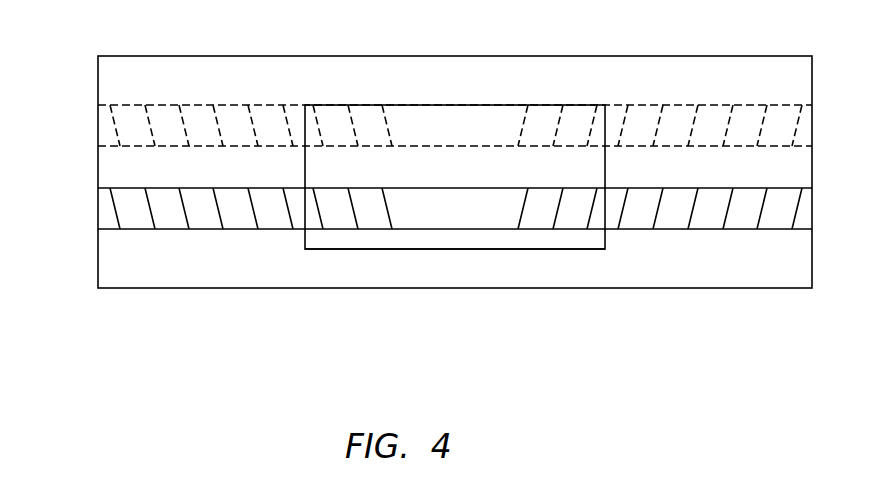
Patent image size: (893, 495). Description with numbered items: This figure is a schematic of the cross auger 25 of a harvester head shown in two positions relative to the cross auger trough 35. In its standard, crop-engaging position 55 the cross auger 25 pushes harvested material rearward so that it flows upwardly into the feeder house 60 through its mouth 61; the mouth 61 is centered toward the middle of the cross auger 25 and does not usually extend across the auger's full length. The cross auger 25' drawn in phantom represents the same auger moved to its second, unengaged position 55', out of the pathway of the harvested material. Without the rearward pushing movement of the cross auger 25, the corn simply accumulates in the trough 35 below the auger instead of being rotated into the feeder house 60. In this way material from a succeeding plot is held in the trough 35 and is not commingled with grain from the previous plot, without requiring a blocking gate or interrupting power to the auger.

The cross auger 25 is at (422, 250).
The cross auger in second position 25' is at (433, 118).
The trough 35 is at (678, 274).
The engaged position 55 is at (456, 276).
The unengaged position 55' is at (456, 80).
The feeder house 60 is at (442, 242).
The mouth 61 is at (323, 249).